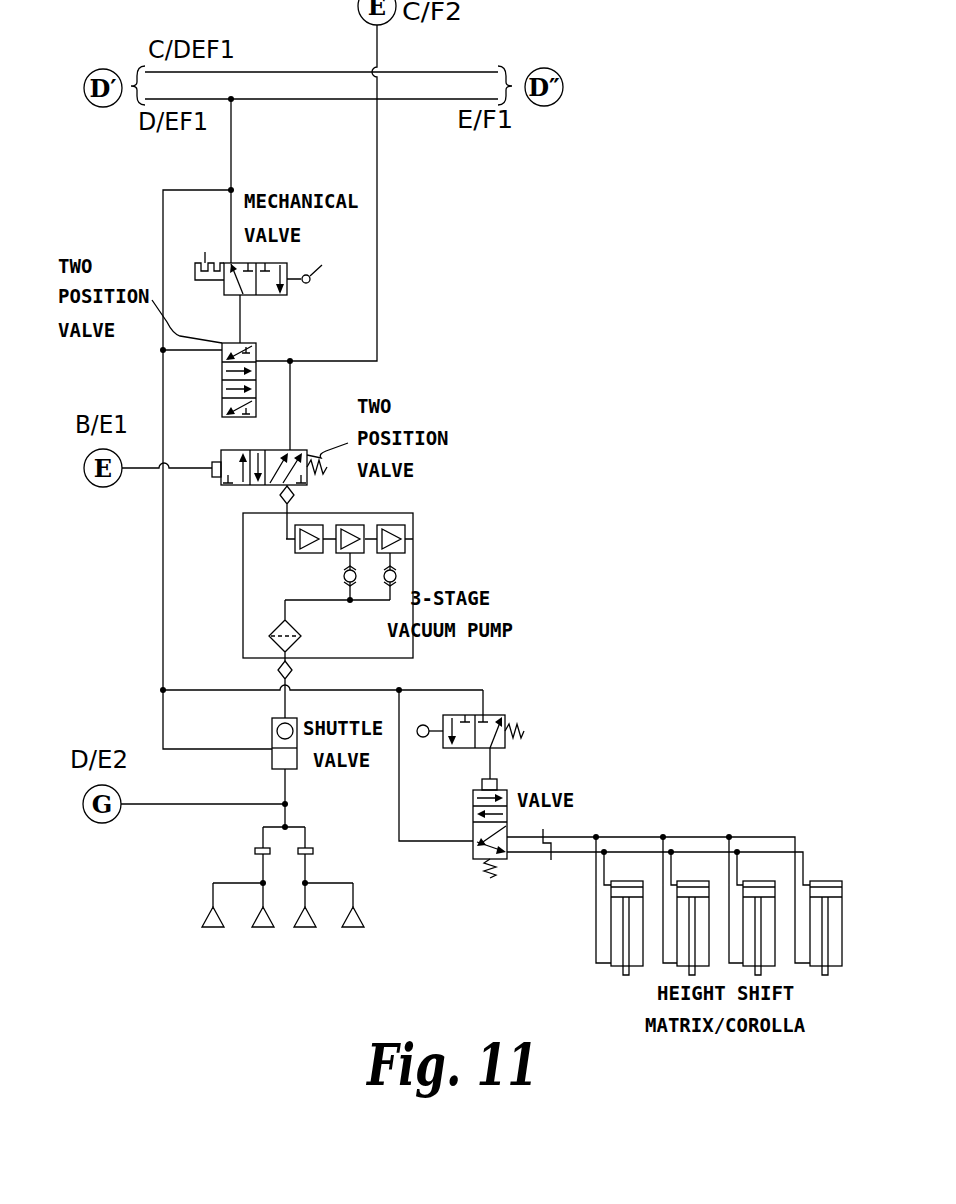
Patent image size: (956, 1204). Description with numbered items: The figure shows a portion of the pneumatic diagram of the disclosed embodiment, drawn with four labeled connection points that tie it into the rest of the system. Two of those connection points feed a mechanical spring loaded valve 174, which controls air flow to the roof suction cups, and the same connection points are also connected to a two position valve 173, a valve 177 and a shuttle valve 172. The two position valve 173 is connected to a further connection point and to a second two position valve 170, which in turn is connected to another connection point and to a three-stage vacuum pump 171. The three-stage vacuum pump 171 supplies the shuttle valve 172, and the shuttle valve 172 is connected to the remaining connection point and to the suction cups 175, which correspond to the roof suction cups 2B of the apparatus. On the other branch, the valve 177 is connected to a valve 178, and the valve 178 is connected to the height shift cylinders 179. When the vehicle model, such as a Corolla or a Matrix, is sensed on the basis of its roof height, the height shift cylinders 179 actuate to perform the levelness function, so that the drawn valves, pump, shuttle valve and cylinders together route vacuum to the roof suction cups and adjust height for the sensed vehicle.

The two position valve 170 is at (221, 452).
The three-stage vacuum pump 171 is at (413, 550).
The shuttle valve 172 is at (297, 770).
The two position valve 173 is at (224, 342).
The mechanical spring loaded valve 174 is at (278, 296).
The suction cups 175 is at (300, 911).
The valve 177 is at (491, 714).
The valve 178 is at (472, 806).
The height shift cylinders 179 is at (674, 882).
The roof suction cups 2B is at (286, 971).